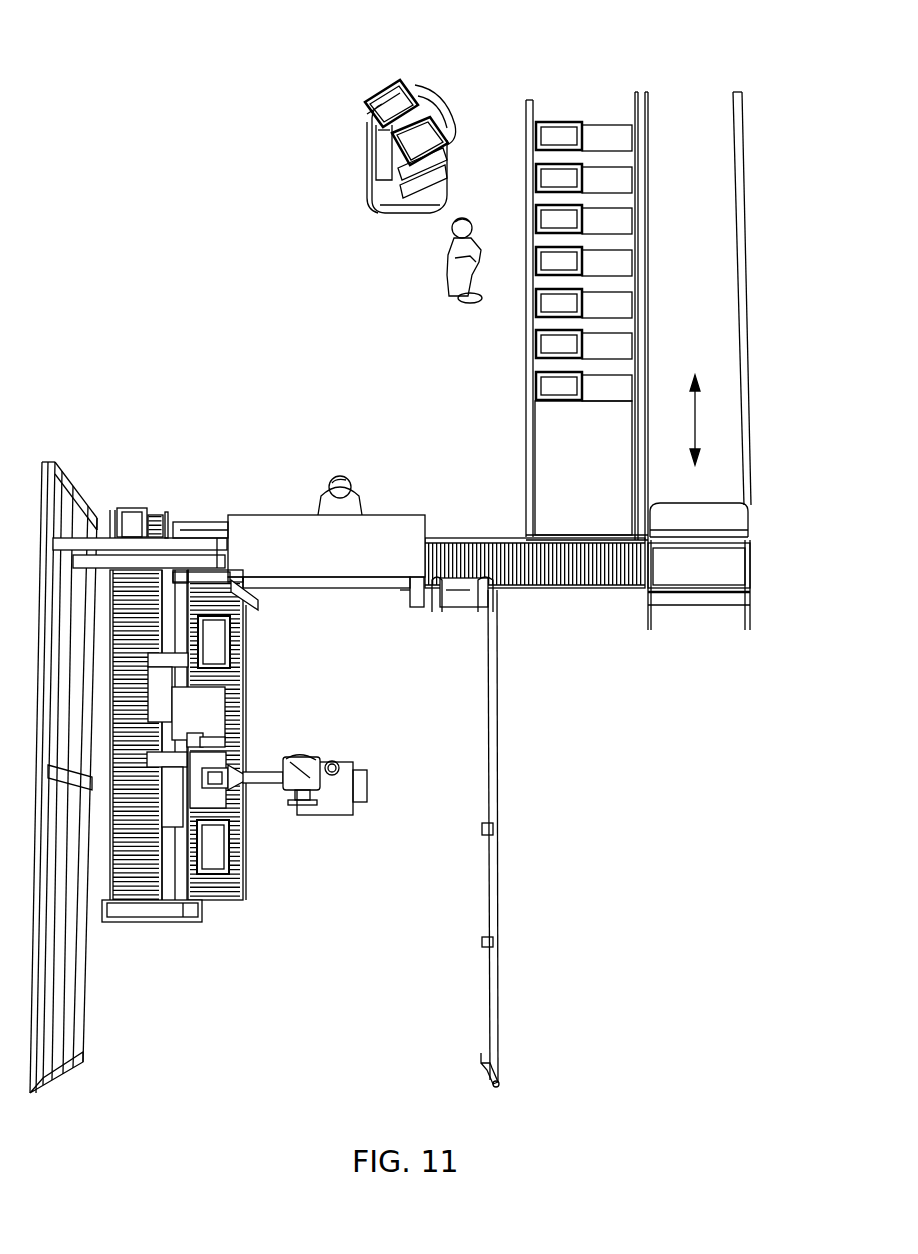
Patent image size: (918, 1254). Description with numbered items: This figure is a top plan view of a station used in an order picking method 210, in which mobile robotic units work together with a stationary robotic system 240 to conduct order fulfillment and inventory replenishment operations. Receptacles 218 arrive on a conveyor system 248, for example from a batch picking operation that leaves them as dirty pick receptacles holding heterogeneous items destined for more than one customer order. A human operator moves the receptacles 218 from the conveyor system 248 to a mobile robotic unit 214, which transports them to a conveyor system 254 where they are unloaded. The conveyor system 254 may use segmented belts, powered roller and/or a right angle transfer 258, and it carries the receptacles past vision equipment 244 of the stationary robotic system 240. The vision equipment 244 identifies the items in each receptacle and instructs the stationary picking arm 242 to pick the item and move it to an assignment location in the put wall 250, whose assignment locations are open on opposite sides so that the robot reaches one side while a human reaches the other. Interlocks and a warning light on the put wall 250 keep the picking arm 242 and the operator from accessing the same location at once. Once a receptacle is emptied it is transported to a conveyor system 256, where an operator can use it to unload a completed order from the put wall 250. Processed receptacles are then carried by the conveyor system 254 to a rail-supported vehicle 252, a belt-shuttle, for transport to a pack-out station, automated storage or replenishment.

The order picking method 210 is at (130, 153).
The mobile robotic unit 214 is at (442, 92).
The receptacle 218 is at (378, 90).
The stationary robotic system 240 is at (211, 514).
The stationary picking arm 242 is at (313, 757).
The vision equipment 244 is at (198, 708).
The conveyor system 248 is at (601, 116).
The put wall 250 is at (411, 508).
The rail-supported vehicle 252 is at (703, 568).
The conveyor system 254 is at (158, 512).
The conveyor system 256 is at (572, 590).
The right angle transfer 258 is at (178, 905).